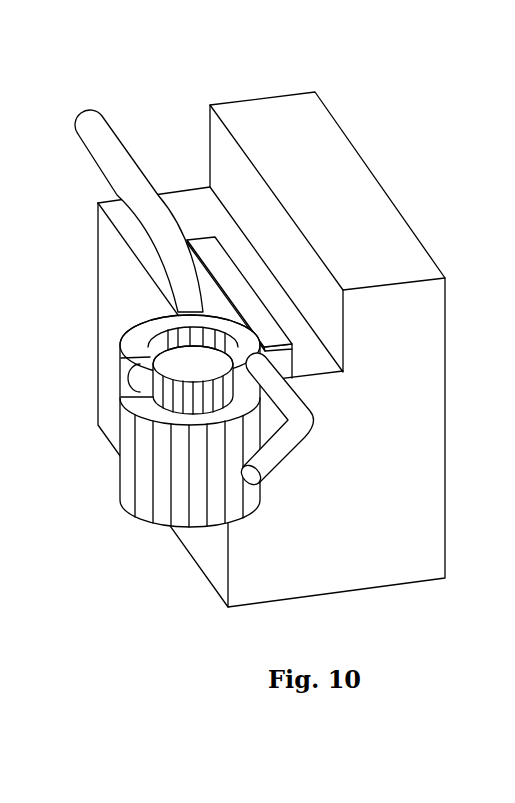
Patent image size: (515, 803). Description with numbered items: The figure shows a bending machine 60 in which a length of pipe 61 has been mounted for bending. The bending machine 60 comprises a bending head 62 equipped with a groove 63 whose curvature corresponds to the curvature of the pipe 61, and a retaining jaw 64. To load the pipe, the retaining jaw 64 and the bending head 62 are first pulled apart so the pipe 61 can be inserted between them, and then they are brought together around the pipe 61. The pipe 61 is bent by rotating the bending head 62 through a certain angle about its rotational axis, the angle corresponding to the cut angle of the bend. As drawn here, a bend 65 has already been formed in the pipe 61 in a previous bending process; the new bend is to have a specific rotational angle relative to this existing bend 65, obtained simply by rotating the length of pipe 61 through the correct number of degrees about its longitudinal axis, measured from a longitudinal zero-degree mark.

The bending machine 60 is at (423, 500).
The length of pipe 61 is at (127, 147).
The bending head 62 is at (128, 455).
The groove 63 is at (122, 372).
The retaining jaw 64 is at (263, 318).
The bend 65 is at (317, 425).